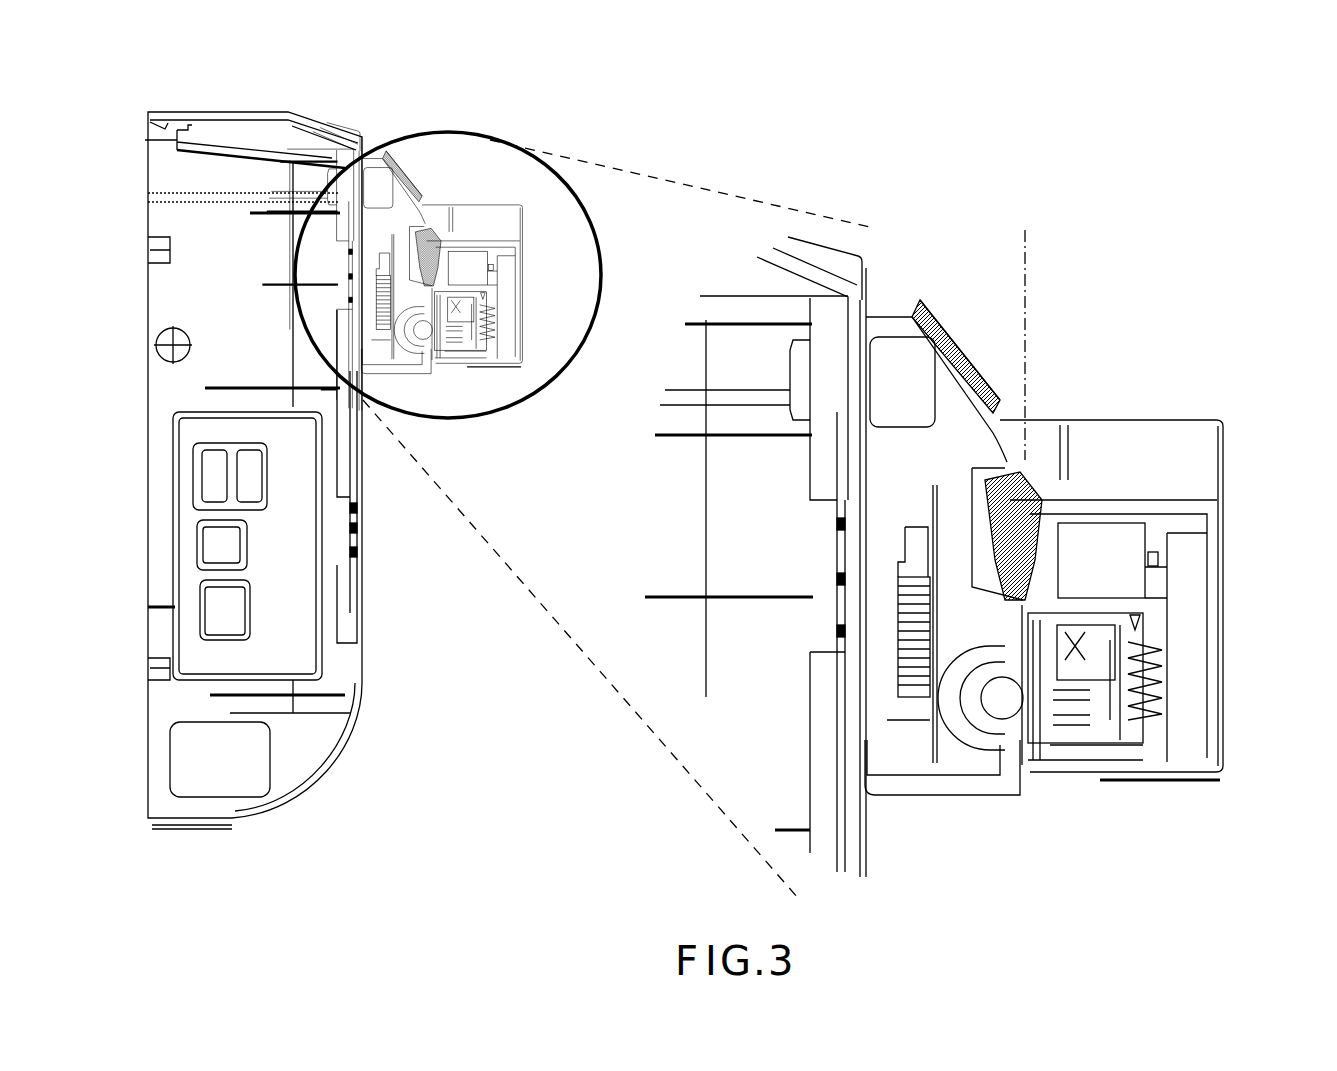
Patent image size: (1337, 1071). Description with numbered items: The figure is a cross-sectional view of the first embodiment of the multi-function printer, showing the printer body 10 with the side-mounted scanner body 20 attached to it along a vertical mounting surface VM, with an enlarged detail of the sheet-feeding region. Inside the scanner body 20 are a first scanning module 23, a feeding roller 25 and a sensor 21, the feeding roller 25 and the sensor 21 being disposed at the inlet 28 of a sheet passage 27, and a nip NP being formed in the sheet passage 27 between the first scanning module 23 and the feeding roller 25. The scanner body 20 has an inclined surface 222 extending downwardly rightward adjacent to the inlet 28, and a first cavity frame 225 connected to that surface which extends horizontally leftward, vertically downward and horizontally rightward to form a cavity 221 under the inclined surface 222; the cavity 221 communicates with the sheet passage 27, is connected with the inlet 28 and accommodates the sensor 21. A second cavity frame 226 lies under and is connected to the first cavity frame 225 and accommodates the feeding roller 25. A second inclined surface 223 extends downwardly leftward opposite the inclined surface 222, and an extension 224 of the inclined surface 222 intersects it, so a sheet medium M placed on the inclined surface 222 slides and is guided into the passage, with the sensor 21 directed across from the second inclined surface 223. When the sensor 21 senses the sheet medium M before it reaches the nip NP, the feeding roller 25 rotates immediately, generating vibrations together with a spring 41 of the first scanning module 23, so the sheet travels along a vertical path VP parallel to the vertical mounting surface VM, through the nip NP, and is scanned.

The printer body 10 is at (356, 124).
The scanner body 20 is at (912, 530).
The sensor 21 is at (992, 492).
The inclined surface 222 is at (932, 320).
The second inclined surface 223 is at (1037, 498).
The cavity 221 is at (992, 570).
The extension 224 is at (1040, 485).
The first cavity frame 225 is at (978, 602).
The second cavity frame 226 is at (958, 712).
The first scanning module 23 is at (1112, 722).
The feeding roller 25 is at (990, 715).
The sheet passage 27 is at (1023, 735).
The inlet 28 is at (1043, 437).
The spring 41 is at (1160, 677).
The sheet medium M is at (1032, 288).
The nip NP is at (1023, 697).
The vertical mounting surface VM is at (860, 708).
The vertical path VP is at (1023, 655).